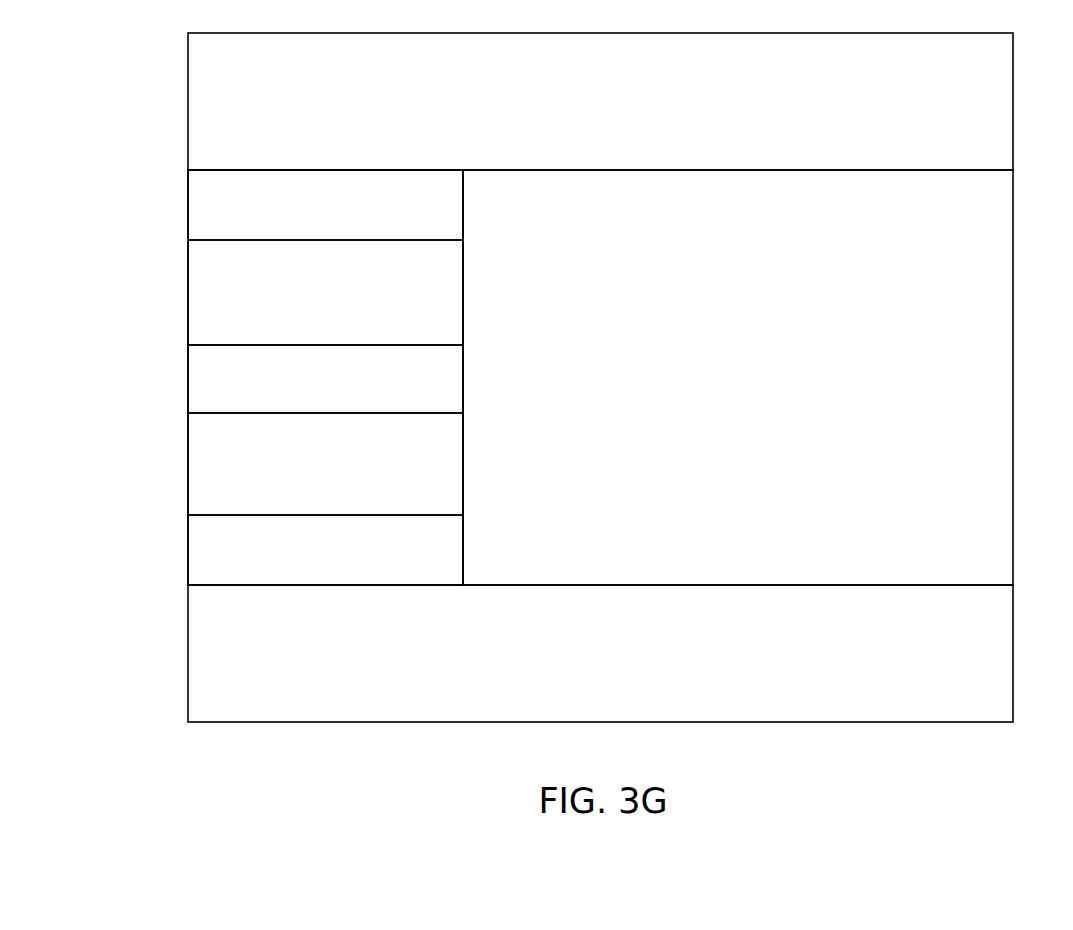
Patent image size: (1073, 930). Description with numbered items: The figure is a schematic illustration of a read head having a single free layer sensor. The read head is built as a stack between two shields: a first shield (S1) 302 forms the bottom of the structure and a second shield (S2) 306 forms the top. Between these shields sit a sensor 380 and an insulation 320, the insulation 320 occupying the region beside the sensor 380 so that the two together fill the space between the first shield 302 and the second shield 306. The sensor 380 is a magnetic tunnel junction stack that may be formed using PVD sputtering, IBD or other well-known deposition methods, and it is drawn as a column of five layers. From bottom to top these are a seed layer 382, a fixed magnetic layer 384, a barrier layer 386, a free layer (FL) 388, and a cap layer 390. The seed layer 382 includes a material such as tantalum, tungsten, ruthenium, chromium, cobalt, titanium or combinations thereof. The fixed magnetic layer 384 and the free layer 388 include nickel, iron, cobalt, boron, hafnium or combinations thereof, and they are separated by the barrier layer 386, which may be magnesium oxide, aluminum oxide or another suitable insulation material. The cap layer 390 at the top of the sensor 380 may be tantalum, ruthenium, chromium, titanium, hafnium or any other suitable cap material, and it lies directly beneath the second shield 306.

The first shield 302 is at (585, 670).
The second shield 306 is at (580, 118).
The insulation 320 is at (713, 400).
The sensor 380 is at (160, 170).
The seed layer 382 is at (307, 565).
The fixed magnetic layer 384 is at (307, 478).
The barrier layer 386 is at (307, 392).
The free layer 388 is at (307, 310).
The cap layer 390 is at (307, 218).